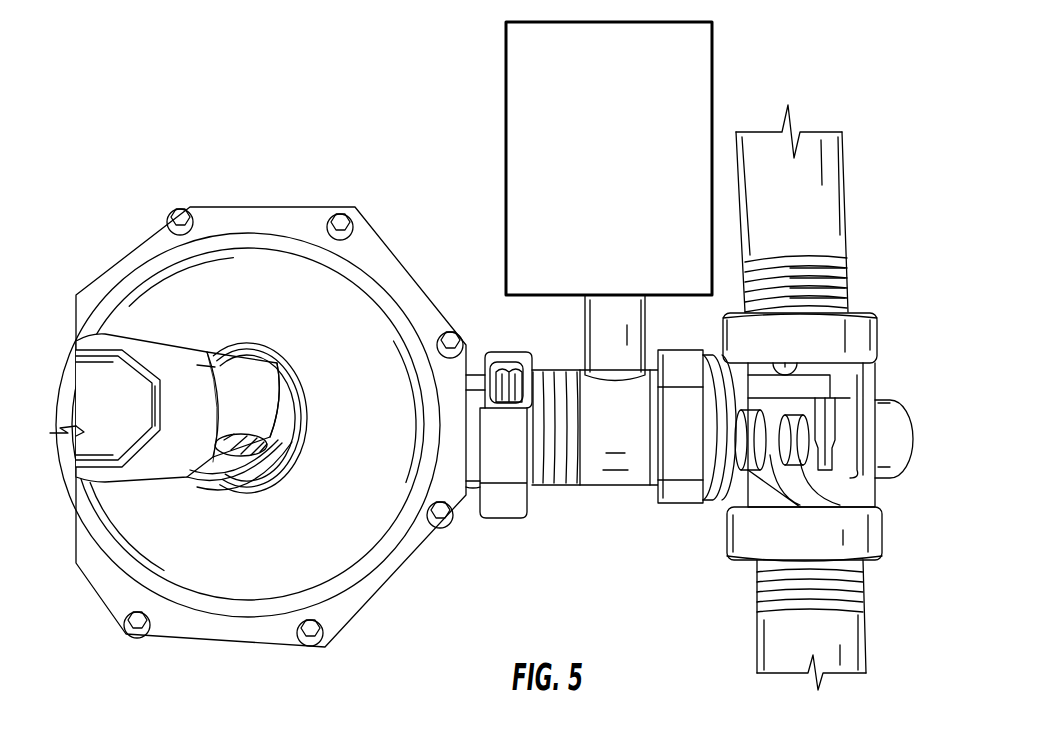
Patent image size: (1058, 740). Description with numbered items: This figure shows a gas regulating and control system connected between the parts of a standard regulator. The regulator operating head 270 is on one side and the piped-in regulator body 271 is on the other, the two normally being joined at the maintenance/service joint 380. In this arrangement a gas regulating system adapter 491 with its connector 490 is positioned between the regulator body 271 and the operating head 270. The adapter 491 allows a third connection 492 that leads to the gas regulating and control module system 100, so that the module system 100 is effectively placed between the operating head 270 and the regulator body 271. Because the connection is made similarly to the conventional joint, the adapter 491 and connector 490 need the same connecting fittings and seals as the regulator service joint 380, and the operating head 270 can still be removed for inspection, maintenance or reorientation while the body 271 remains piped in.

The gas regulating and control module system 100 is at (627, 212).
The operating head 270 is at (347, 546).
The regulator body 271 is at (858, 533).
The service joint 380 is at (500, 518).
The connector 490 is at (683, 490).
The gas regulating system adapter 491 is at (614, 462).
The third connection 492 is at (605, 330).